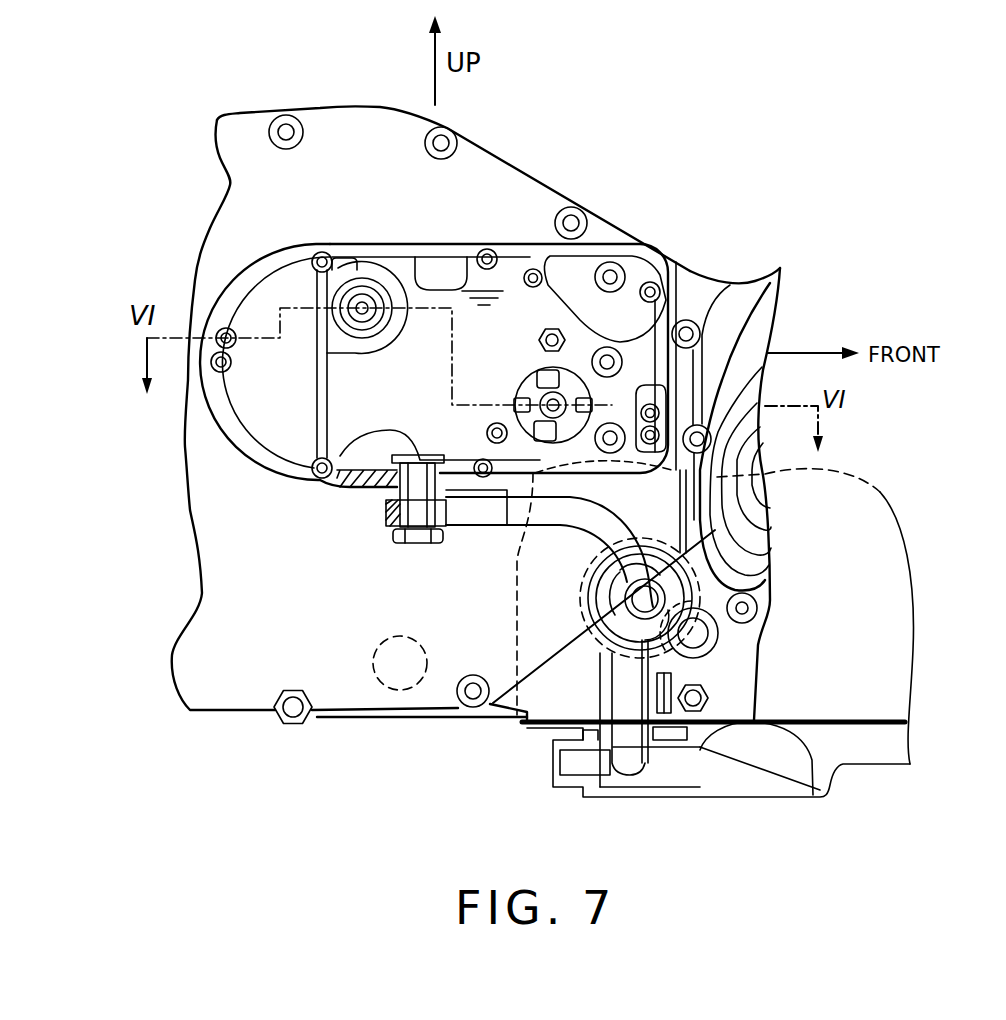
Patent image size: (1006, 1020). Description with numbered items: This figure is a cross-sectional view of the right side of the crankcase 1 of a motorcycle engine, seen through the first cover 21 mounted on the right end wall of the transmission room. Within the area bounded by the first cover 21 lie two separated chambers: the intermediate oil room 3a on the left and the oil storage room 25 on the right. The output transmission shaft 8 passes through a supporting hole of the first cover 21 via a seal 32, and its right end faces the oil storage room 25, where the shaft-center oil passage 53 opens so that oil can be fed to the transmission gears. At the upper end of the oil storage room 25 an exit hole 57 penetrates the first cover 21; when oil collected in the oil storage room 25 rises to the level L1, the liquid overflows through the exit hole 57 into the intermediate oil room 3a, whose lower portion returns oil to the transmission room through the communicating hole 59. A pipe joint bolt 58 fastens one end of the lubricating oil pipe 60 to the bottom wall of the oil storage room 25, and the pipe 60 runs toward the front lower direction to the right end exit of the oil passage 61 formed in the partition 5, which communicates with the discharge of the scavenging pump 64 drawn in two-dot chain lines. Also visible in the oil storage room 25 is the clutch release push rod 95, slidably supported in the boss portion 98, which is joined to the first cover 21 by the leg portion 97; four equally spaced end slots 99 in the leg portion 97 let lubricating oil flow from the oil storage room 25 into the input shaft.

The crankcase 1 is at (757, 312).
The intermediate oil room 3a is at (300, 395).
The partition 5 is at (757, 631).
The output transmission shaft 8 is at (357, 278).
The first cover 21 is at (290, 480).
The oil storage room 25 is at (438, 398).
The seal 32 is at (317, 288).
The oil passage 53 is at (362, 320).
The exit hole 57 is at (437, 265).
The pipe joint bolt 58 is at (397, 543).
The communicating hole 59 is at (373, 663).
The lubricating oil pipe 60 is at (477, 527).
The oil passage 61 is at (722, 652).
The scavenging pump 64 is at (572, 614).
The push rod 95 is at (540, 388).
The leg portion 97 is at (532, 380).
The boss portion 98 is at (534, 445).
The end slots 99 is at (522, 398).
The oil level L1 is at (510, 262).